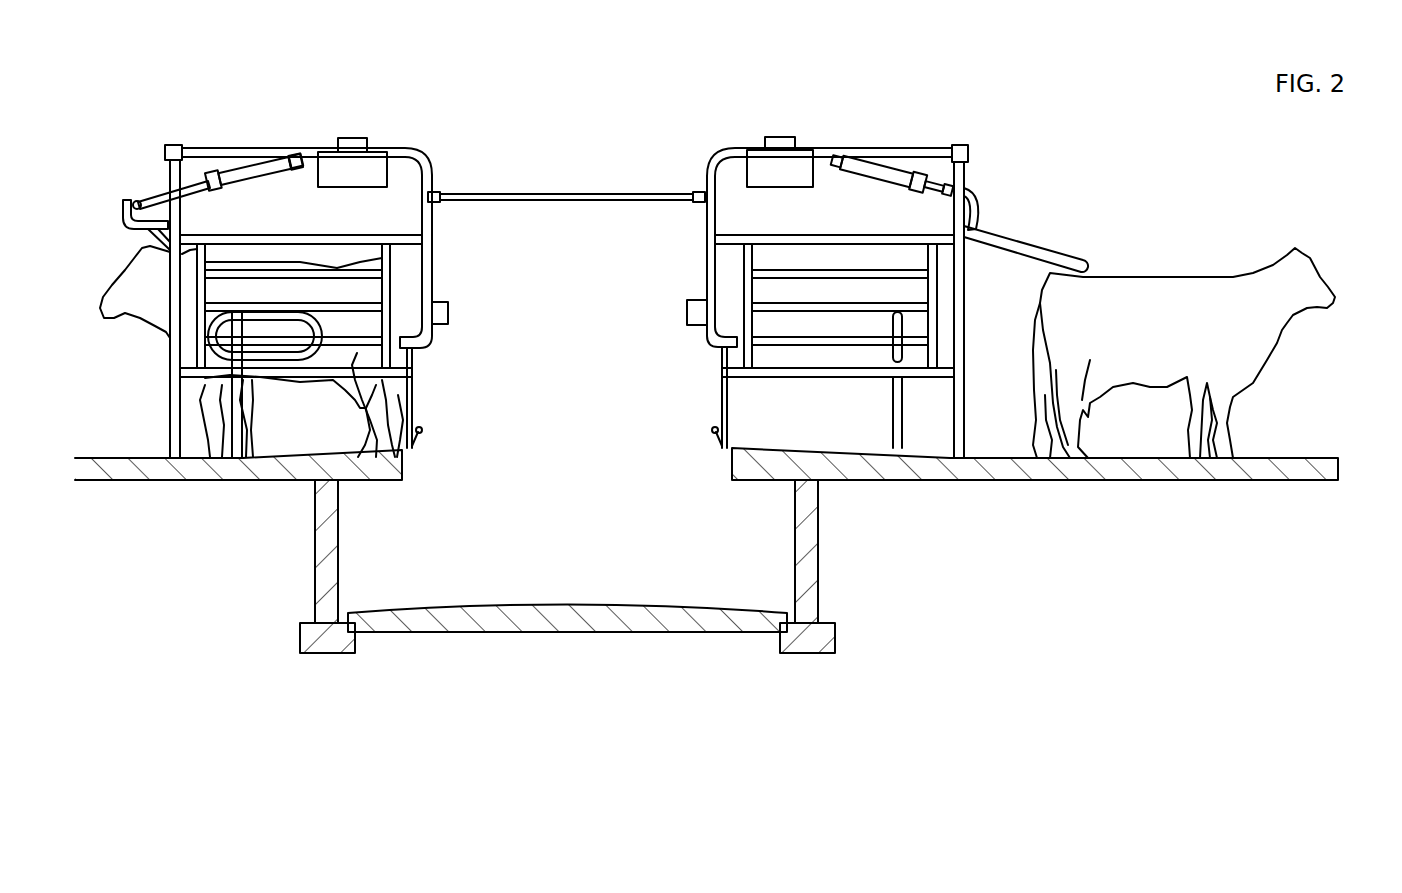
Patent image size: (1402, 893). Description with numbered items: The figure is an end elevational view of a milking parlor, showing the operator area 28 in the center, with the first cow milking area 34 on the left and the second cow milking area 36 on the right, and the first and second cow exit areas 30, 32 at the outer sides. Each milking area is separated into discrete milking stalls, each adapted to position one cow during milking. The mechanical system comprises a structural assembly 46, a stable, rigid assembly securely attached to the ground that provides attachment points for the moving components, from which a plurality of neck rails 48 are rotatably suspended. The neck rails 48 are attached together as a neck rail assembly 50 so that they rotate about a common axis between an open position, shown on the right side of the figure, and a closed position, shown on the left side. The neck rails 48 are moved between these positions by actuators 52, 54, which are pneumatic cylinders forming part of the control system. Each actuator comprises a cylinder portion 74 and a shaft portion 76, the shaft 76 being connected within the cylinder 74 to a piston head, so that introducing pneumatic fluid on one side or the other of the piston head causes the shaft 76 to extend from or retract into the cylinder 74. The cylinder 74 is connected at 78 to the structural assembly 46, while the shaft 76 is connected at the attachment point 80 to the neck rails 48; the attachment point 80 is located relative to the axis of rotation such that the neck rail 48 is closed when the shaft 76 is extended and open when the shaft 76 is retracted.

The operator area 28 is at (549, 342).
The first cow exit area 30 is at (64, 282).
The second cow exit area 32 is at (1166, 240).
The first cow milking area 34 is at (320, 98).
The second cow milking area 36 is at (890, 125).
The structural assembly 46 is at (150, 122).
The neck rail 48 is at (1048, 240).
The neck rail assembly 50 is at (1040, 215).
The actuator 52 is at (259, 184).
The actuator 54 is at (870, 180).
The cylinder portion 74 is at (226, 163).
The shaft portion 76 is at (150, 193).
The connection point of cylinder to structural assembly 78 is at (305, 150).
The attachment point 80 is at (130, 198).